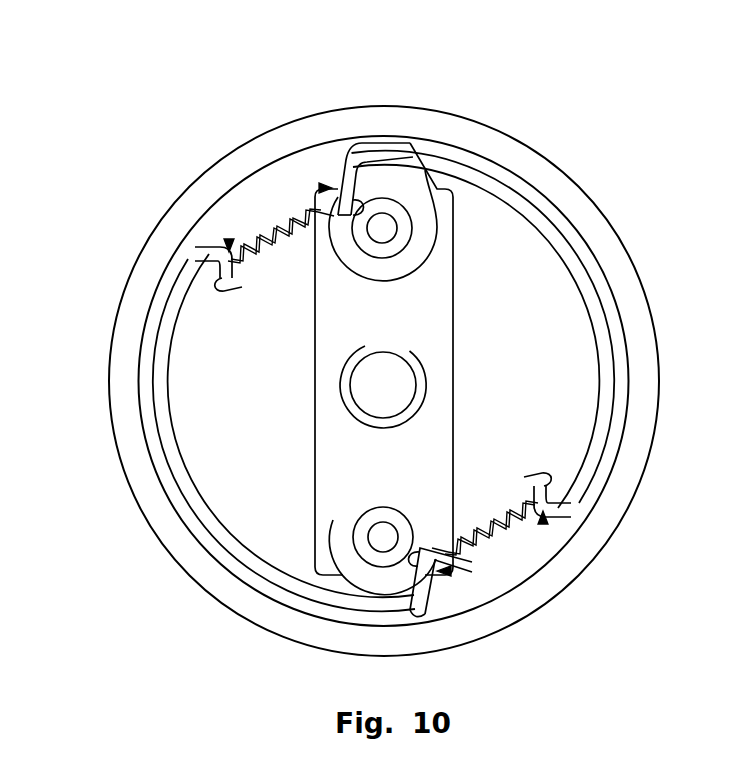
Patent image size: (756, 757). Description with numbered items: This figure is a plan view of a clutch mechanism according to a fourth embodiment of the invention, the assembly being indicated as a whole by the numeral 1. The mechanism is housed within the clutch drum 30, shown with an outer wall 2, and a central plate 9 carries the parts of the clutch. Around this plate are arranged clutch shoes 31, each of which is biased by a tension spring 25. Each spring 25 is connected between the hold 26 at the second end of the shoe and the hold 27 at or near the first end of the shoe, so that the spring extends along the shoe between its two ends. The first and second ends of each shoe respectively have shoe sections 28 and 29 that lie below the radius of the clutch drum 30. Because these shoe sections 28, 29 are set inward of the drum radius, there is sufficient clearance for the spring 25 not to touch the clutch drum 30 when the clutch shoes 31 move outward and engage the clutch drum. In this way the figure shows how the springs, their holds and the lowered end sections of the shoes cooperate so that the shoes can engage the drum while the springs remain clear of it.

The closure assembly 1 is at (146, 59).
The housing wall 2 is at (530, 163).
The plate 9 is at (420, 330).
The tension spring 25 is at (273, 223).
The hold 26 is at (229, 240).
The hold 27 is at (319, 188).
The shoe section 28 is at (357, 172).
The shoe section 29 is at (213, 260).
The clutch drum 30 is at (592, 200).
The clutch shoes 31 is at (597, 315).